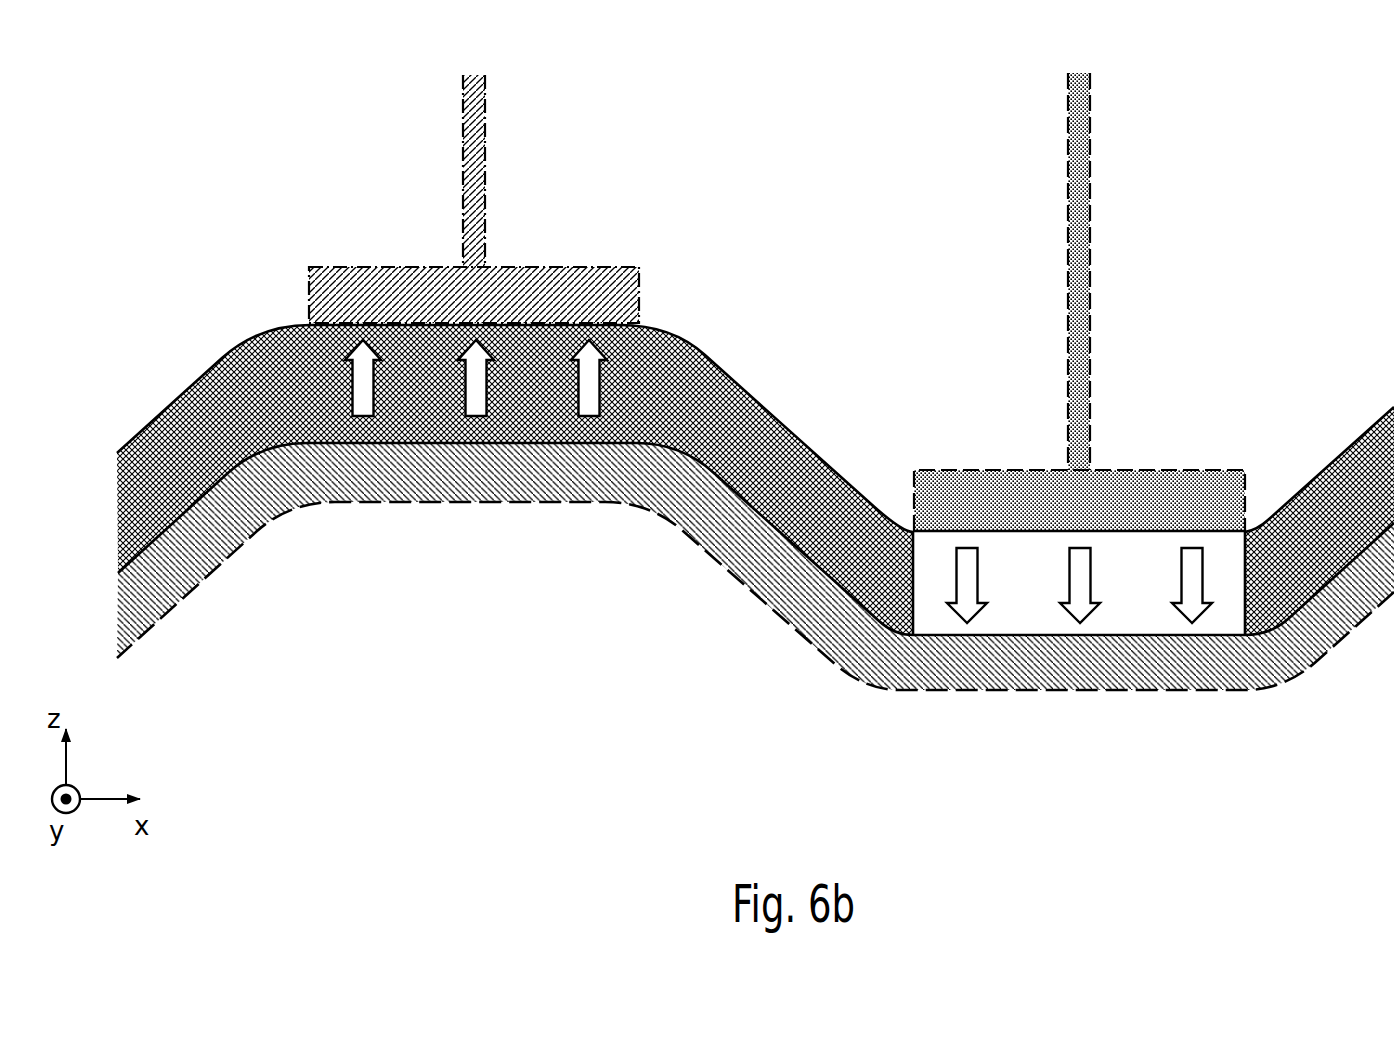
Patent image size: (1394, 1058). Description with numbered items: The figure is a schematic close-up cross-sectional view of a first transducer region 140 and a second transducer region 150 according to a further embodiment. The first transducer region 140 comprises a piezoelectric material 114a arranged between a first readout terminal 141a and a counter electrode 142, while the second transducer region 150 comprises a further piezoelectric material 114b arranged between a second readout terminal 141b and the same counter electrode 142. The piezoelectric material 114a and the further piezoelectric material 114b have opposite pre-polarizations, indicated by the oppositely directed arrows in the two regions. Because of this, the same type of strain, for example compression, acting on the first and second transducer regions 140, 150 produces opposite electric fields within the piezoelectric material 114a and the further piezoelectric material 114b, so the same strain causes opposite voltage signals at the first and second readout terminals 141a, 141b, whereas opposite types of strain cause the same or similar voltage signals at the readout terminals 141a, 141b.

The first transducer region 140 is at (474, 199).
The first readout terminal 141a is at (575, 267).
The second transducer region 150 is at (1064, 302).
The second readout terminal 141b is at (1162, 477).
The counter electrode 142 is at (1293, 657).
The piezoelectric material 114a is at (443, 442).
The further piezoelectric material 114b is at (940, 629).